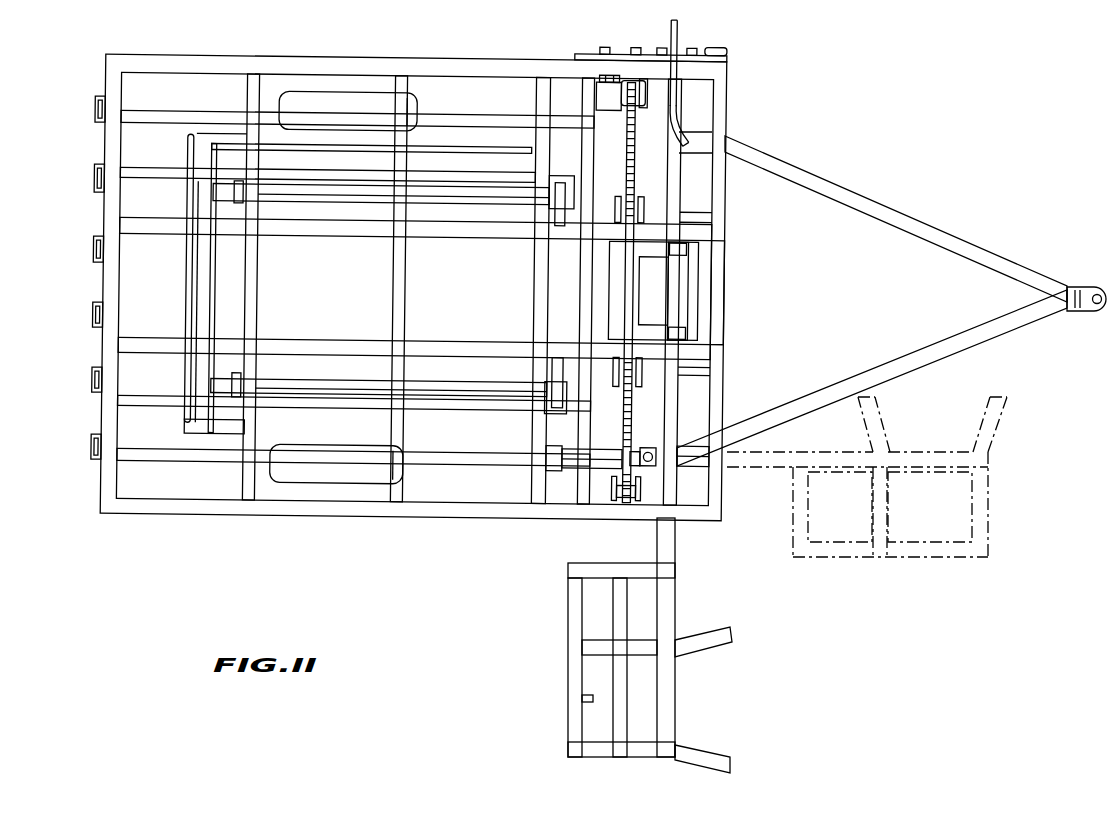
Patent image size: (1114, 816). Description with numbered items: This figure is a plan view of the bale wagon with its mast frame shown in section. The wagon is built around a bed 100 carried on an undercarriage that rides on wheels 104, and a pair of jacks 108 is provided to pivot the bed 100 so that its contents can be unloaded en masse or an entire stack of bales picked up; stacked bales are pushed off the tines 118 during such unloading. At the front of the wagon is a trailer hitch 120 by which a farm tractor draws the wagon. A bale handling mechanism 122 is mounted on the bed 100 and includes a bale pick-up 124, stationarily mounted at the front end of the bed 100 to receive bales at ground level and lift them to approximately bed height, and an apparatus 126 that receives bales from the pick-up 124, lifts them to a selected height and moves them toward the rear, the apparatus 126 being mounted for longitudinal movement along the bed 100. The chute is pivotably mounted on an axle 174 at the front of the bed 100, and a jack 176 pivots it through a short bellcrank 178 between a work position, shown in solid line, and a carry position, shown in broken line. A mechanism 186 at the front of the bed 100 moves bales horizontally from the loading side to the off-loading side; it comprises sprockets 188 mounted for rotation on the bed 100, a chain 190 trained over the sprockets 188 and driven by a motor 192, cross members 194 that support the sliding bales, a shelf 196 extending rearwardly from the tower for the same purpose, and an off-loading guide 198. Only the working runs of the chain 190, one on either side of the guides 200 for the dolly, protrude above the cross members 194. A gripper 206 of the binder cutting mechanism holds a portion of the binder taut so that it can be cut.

The bed 100 is at (332, 284).
The wheels 104 is at (298, 100).
The jacks 108 is at (472, 192).
The tines 118 is at (93, 316).
The trailer hitch 120 is at (878, 207).
The bale handling mechanism 122 is at (682, 553).
The bale pick-up 124 is at (573, 670).
The apparatus 126 is at (700, 288).
The axle 174 is at (693, 447).
The jack 176 is at (560, 462).
The bellcrank 178 is at (648, 470).
The mechanism 186 is at (644, 180).
The sprockets 188 is at (642, 110).
The chain 190 is at (683, 140).
The motor 192 is at (600, 98).
The cross members 194 is at (680, 213).
The shelf 196 is at (620, 300).
The off-loading guide 198 is at (678, 38).
The guides 200 is at (582, 233).
The gripper 206 is at (640, 50).